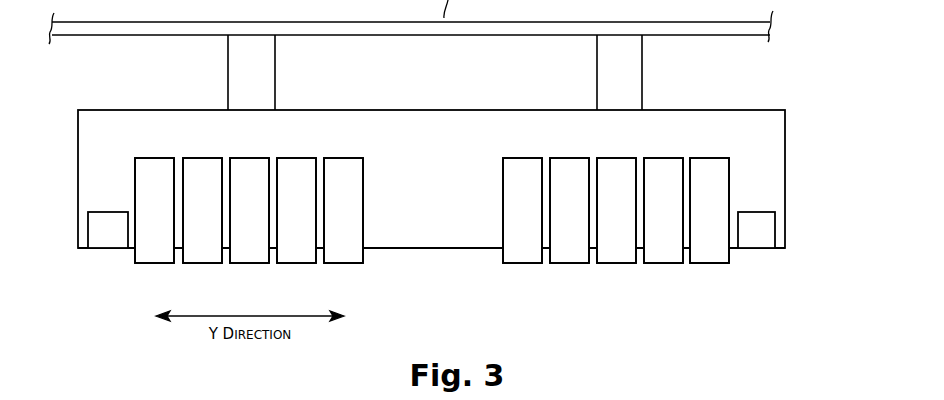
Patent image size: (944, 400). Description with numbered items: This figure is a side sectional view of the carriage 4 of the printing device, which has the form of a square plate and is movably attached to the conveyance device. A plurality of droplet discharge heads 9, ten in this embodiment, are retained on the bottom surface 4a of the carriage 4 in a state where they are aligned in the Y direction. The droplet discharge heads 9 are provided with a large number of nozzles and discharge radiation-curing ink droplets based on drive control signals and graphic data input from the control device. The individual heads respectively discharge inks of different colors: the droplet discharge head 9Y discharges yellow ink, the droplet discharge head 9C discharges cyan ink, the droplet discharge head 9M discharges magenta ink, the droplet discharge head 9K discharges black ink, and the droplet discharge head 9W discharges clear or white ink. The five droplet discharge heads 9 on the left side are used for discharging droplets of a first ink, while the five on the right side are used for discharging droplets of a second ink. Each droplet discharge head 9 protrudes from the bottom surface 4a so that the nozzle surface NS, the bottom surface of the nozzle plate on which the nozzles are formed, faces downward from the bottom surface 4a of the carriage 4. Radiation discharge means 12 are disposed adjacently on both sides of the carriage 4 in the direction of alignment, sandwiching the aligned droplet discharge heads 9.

The carriage 4 is at (786, 127).
The bottom surface 4a is at (83, 249).
The radiation discharge means 12 is at (103, 212).
The droplet discharge head 9 is at (447, 164).
The droplet discharge head for yellow ink 9Y is at (153, 158).
The droplet discharge head for cyan ink 9C is at (199, 158).
The droplet discharge head for magenta ink 9M is at (252, 158).
The droplet discharge head for black ink 9K is at (299, 158).
The droplet discharge head for clear or white ink 9W is at (345, 158).
The nozzle surface NS is at (344, 266).